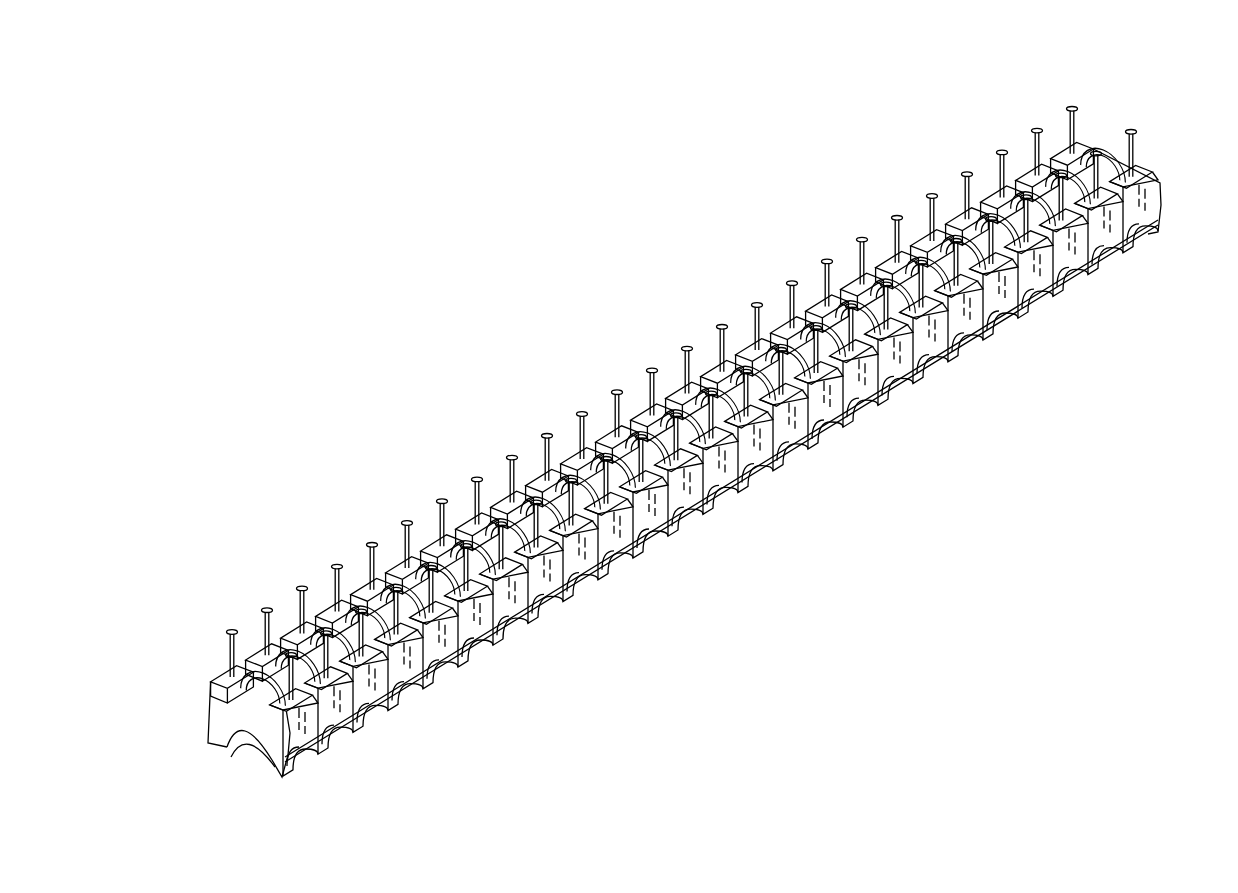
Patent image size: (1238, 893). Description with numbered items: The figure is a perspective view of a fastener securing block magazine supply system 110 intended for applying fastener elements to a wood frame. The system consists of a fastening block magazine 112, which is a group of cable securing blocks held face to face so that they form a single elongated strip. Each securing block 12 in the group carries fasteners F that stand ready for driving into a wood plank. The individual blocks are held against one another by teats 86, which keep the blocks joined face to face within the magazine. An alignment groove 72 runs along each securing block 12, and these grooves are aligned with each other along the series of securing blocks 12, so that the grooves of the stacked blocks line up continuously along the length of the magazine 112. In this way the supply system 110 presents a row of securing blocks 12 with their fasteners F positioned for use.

The fastener securing block magazine supply system 110 is at (445, 216).
The fastening block magazine 112 is at (1108, 140).
The fasteners F is at (233, 628).
The teats 86 is at (250, 800).
The securing block 12 is at (305, 736).
The alignment groove 72 is at (300, 760).